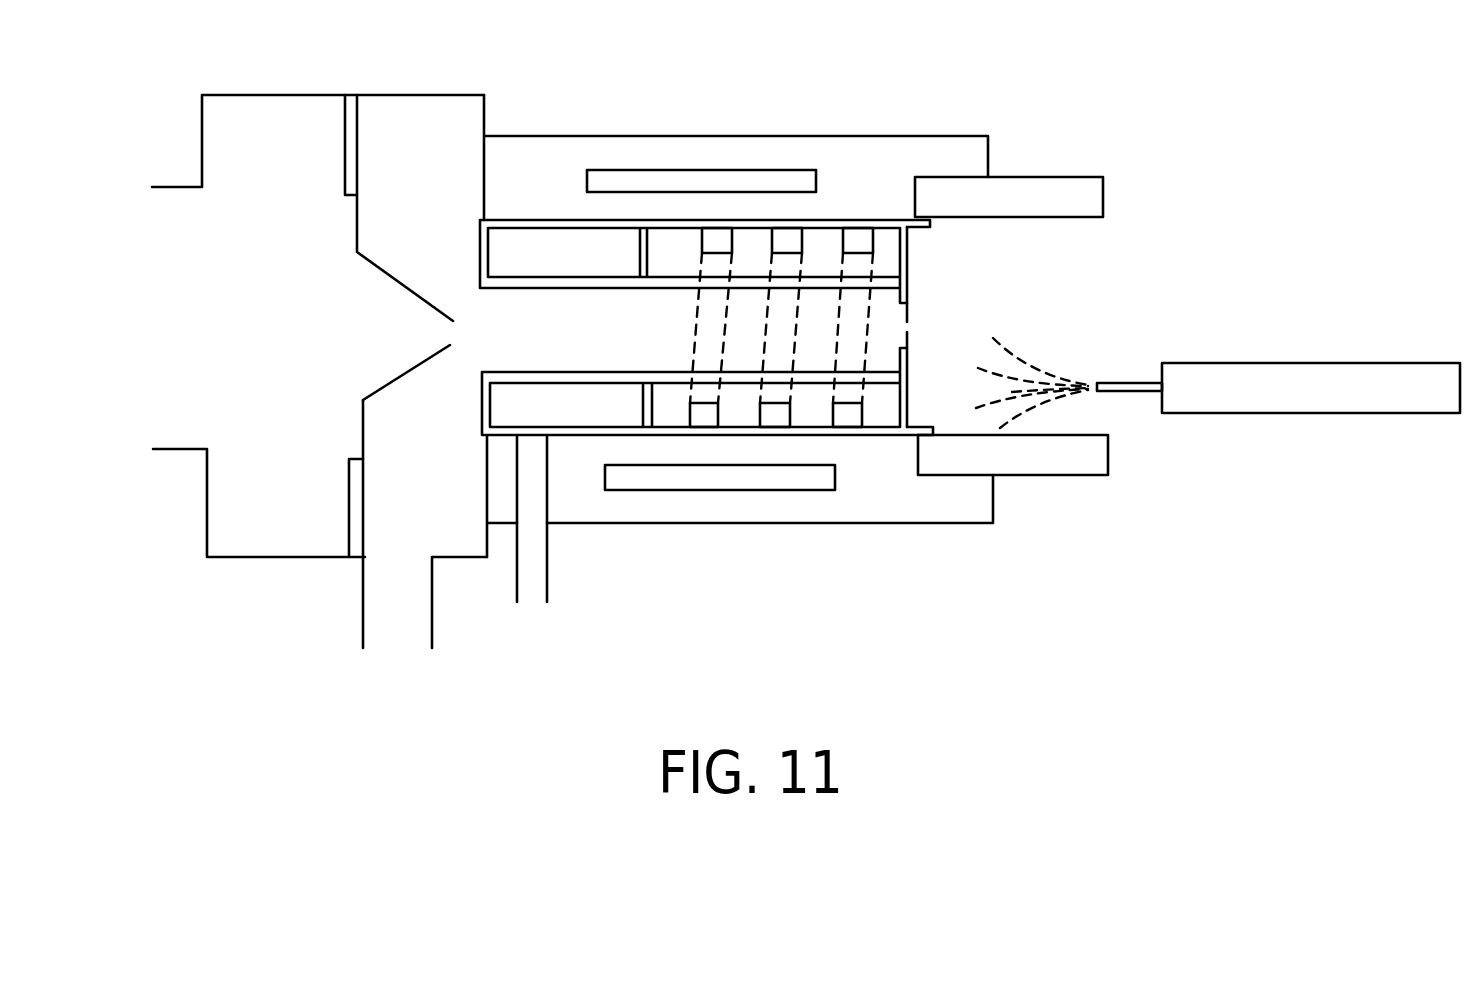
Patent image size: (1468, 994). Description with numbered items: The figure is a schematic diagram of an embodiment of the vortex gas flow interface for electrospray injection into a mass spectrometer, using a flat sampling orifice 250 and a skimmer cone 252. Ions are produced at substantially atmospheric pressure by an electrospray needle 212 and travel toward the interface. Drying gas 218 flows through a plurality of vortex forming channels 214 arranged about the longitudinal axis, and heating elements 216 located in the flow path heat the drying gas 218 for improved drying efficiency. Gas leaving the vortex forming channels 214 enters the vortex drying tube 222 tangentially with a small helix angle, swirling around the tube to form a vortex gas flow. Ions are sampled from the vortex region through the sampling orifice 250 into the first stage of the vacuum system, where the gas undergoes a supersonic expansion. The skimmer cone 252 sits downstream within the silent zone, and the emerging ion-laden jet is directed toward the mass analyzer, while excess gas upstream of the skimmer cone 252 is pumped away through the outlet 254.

The electrospray needle 212 is at (1122, 383).
The vortex forming channels 214 is at (862, 217).
The heating element 216 is at (694, 170).
The drying gas 218 is at (540, 616).
The vortex drying tube 222 is at (1037, 475).
The sampling orifice 250 is at (922, 312).
The skimmer cone 252 is at (368, 358).
The outlet 254 is at (399, 655).